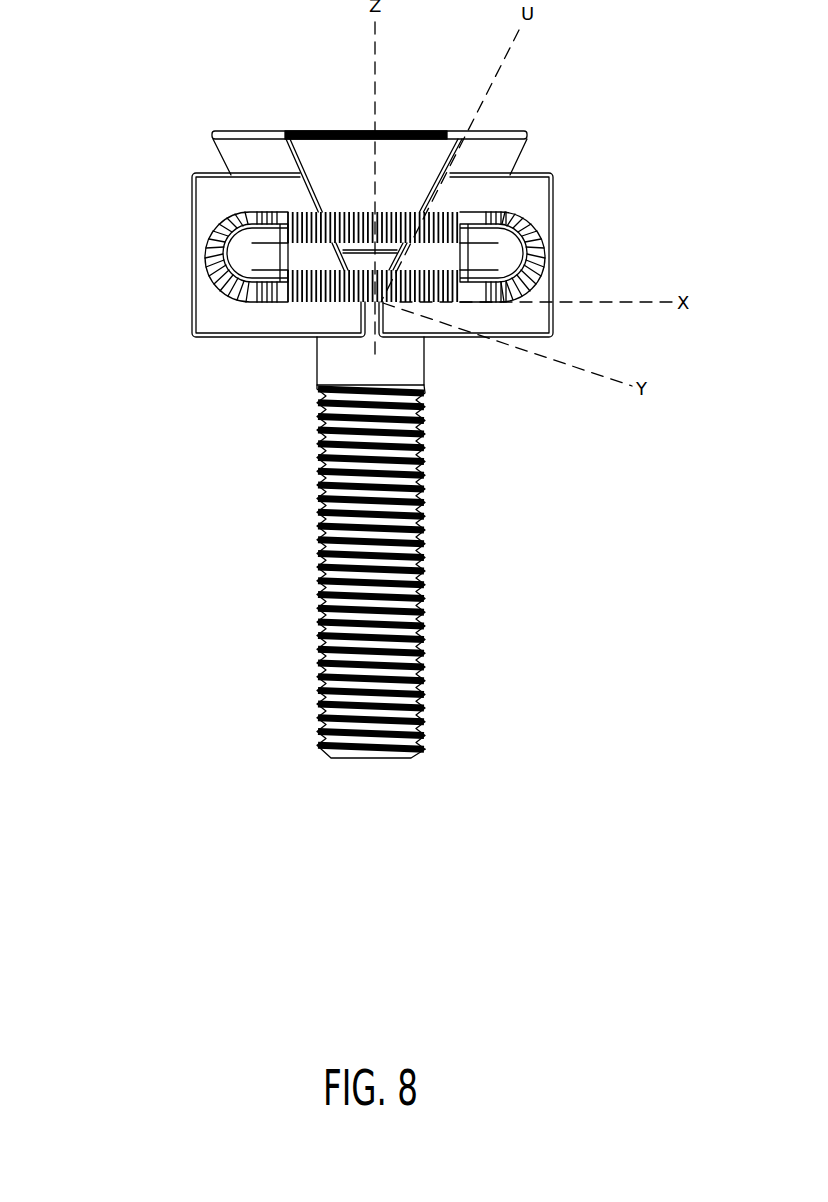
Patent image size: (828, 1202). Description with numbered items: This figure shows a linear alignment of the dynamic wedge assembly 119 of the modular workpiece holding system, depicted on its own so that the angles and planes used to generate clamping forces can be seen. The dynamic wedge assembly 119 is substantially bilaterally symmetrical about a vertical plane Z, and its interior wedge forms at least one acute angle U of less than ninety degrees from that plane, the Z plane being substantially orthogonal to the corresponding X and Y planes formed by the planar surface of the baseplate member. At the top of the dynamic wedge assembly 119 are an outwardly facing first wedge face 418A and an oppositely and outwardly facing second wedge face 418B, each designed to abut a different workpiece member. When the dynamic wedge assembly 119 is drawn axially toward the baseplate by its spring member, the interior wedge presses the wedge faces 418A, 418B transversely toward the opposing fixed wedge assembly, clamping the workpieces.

The dynamic wedge assembly 119 is at (560, 632).
The first wedge face 418A is at (553, 222).
The second wedge face 418B is at (192, 305).